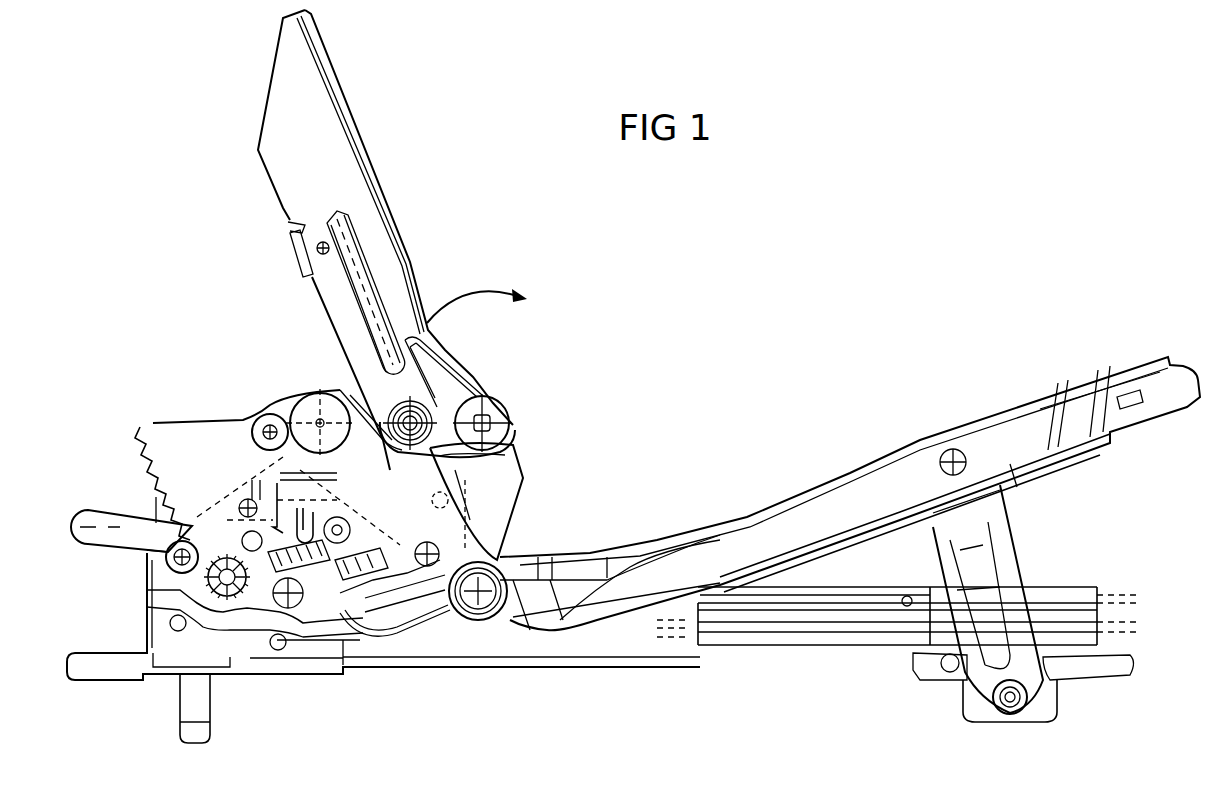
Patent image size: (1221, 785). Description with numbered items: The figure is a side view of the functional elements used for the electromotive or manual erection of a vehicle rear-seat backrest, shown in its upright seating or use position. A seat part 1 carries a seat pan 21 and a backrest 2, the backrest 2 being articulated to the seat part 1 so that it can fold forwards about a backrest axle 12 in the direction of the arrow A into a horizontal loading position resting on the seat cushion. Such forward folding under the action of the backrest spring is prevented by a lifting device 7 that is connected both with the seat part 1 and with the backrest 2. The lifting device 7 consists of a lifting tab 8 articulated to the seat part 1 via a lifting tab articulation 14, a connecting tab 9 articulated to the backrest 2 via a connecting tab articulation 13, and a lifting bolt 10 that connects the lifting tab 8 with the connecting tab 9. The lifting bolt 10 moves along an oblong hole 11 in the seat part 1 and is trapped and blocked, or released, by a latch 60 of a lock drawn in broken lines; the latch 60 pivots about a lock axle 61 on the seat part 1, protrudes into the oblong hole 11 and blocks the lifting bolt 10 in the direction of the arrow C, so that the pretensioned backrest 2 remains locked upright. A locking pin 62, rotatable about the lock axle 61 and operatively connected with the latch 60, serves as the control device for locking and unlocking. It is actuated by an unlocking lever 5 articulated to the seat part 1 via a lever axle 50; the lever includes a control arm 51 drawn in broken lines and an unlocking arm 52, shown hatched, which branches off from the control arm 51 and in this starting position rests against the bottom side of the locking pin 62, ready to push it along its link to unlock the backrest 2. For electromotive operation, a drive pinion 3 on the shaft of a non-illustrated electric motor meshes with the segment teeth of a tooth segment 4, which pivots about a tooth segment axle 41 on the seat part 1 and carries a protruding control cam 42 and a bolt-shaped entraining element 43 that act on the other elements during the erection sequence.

The seat part 1 is at (637, 637).
The backrest 2 is at (393, 310).
The drive pinion 3 is at (225, 598).
The tooth segment 4 is at (208, 513).
The unlocking lever 5 is at (100, 508).
The lifting device 7 is at (603, 420).
The lifting tab 8 is at (346, 400).
The connecting tab 9 is at (477, 472).
The lifting bolt 10 is at (474, 625).
The oblong hole 11 is at (304, 548).
The backrest axle 12 is at (430, 419).
The connecting tab articulation 13 is at (510, 420).
The lifting tab articulation 14 is at (310, 407).
The seat pan 21 is at (877, 477).
The tooth segment axle 41 is at (266, 414).
The control cam 42 is at (246, 498).
The entraining element 43 is at (254, 552).
The lever axle 50 is at (176, 568).
The control arm 51 is at (185, 462).
The unlocking arm 52 is at (342, 574).
The latch 60 is at (460, 517).
The lock axle 61 is at (448, 497).
The locking pin 62 is at (318, 570).
The arrow A is at (489, 302).
The arrow C is at (365, 595).